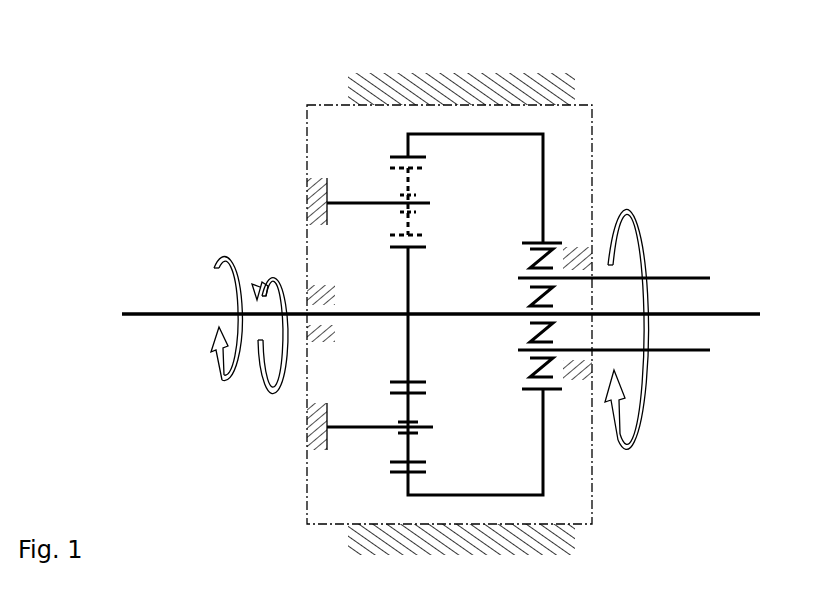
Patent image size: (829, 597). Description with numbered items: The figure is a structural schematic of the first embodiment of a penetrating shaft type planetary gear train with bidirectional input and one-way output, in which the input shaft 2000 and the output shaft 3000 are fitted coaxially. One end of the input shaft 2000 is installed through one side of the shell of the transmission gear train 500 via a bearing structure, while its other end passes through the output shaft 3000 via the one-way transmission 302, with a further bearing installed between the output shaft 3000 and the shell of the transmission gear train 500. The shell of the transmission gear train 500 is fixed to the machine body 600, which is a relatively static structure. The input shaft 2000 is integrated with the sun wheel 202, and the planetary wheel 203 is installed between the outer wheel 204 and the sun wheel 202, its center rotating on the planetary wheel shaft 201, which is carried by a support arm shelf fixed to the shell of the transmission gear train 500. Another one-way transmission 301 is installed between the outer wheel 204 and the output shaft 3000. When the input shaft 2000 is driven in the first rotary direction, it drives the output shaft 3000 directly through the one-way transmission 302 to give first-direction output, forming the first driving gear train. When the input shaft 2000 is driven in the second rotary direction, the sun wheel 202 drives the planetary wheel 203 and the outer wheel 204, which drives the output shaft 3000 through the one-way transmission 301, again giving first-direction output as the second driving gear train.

The input shaft 2000 is at (203, 313).
The output shaft 3000 is at (680, 278).
The shell of the transmission gear train 500 is at (305, 148).
The machine body 600 is at (468, 92).
The planetary wheel shaft 201 is at (422, 430).
The sun wheel 202 is at (428, 247).
The planetary wheel 203 is at (393, 168).
The outer wheel 204 is at (392, 472).
The one-way transmission 301 is at (530, 258).
The one-way transmission 302 is at (530, 330).